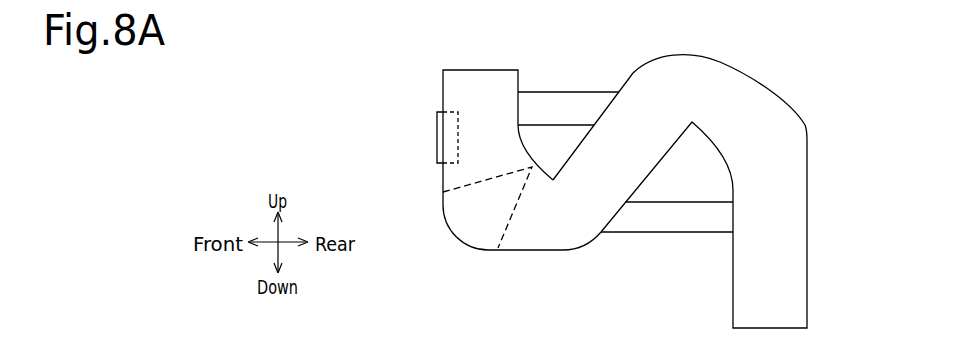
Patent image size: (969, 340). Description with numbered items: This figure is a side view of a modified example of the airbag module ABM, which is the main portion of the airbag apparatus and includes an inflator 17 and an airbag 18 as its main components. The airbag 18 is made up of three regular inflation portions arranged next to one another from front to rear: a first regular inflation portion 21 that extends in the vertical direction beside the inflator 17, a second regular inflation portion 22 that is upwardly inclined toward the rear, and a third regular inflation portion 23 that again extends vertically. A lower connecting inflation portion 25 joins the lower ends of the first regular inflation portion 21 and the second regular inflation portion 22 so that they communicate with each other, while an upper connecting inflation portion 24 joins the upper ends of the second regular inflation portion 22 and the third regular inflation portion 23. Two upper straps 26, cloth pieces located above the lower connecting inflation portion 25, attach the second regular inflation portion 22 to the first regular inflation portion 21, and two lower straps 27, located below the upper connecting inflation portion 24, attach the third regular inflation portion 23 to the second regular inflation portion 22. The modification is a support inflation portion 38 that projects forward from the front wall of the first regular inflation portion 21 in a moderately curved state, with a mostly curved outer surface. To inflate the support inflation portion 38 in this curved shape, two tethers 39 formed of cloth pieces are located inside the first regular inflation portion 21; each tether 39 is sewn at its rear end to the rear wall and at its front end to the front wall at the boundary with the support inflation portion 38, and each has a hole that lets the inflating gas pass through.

The inflator 17 is at (437, 136).
The airbag 18 is at (782, 78).
The first regular inflation portion 21 is at (485, 70).
The second regular inflation portion 22 is at (638, 165).
The third regular inflation portion 23 is at (803, 233).
The upper connecting inflation portion 24 is at (695, 59).
The lower connecting inflation portion 25 is at (560, 246).
The upper straps 26 is at (566, 92).
The lower straps 27 is at (666, 231).
The support inflation portion 38 is at (453, 239).
The tethers 39 is at (485, 177).
The airbag module ABM is at (423, 96).